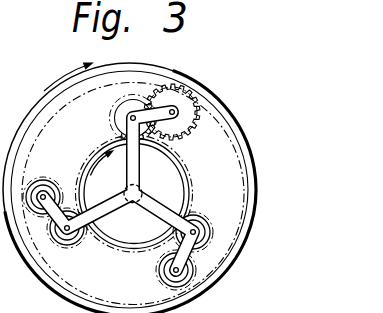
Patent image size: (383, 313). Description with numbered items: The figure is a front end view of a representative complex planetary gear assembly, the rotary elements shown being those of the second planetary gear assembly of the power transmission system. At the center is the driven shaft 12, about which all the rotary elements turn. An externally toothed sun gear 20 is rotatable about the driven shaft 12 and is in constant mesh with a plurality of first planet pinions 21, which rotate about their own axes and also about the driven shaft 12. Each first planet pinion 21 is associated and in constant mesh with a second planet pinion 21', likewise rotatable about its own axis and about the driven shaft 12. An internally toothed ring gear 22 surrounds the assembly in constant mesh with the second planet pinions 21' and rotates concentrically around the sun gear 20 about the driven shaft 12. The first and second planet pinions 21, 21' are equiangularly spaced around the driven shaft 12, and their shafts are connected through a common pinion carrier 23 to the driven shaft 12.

The driven shaft 12 is at (129, 201).
The sun gear 20 is at (190, 181).
The first planet pinions 21 is at (109, 119).
The second planet pinions 21' is at (208, 112).
The ring gear 22 is at (234, 273).
The pinion carrier 23 is at (83, 188).